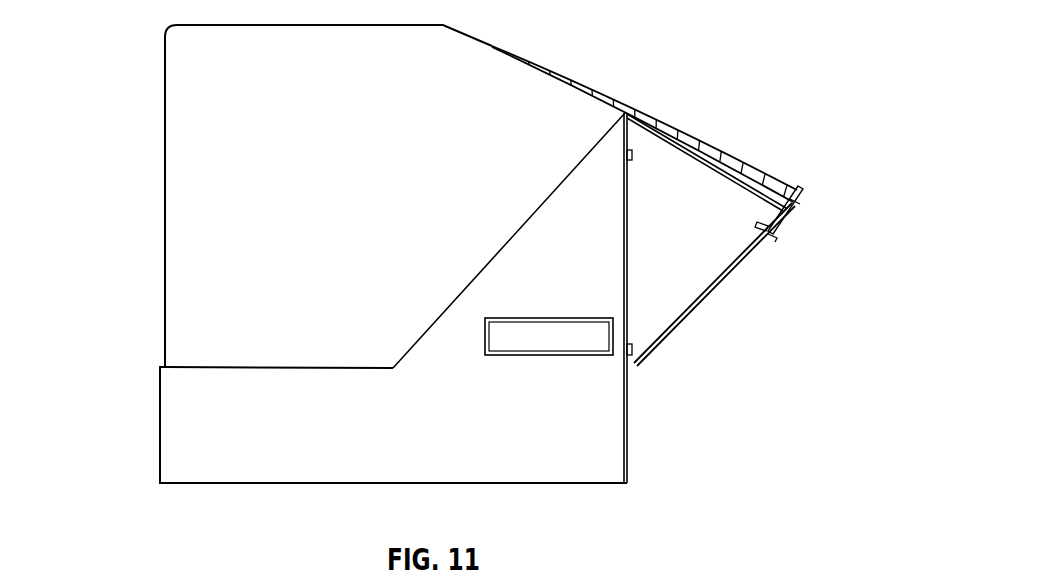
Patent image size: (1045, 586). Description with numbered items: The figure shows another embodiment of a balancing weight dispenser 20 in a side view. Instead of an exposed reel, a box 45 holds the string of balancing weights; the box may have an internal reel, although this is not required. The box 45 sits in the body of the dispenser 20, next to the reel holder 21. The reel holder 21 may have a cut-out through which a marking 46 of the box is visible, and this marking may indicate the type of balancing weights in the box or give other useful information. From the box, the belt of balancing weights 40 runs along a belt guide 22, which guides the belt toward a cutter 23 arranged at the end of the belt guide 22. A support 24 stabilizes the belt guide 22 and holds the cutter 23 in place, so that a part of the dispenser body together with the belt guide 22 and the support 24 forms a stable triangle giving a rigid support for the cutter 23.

The second balancing weight dispenser 20 is at (118, 421).
The box 45 is at (190, 205).
The reel holder 21 is at (537, 265).
The marking 46 is at (572, 338).
The belt of balancing weights 40 is at (712, 150).
The belt guide 22 is at (697, 158).
The cutter 23 is at (801, 197).
The support 24 is at (718, 290).